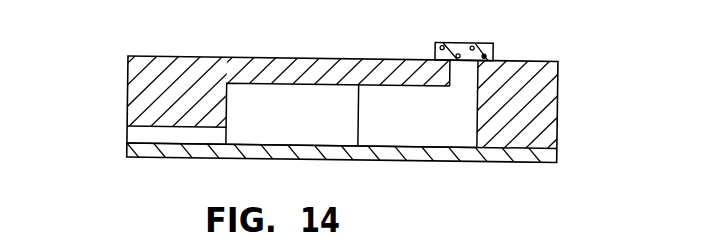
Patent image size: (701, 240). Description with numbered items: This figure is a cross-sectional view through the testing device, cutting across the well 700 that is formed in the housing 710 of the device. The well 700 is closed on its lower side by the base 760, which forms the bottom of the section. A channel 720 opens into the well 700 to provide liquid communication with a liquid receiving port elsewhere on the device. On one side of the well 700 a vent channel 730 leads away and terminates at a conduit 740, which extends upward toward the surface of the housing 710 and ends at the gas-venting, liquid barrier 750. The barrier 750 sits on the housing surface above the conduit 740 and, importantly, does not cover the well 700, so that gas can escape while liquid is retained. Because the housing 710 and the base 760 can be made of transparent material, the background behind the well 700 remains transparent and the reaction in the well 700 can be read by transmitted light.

The well 700 is at (253, 112).
The housing 710 is at (532, 104).
The channel 720 is at (138, 133).
The vent channel 730 is at (418, 132).
The conduit 740 is at (465, 77).
The gas-venting, liquid barrier 750 is at (474, 42).
The base 760 is at (547, 154).